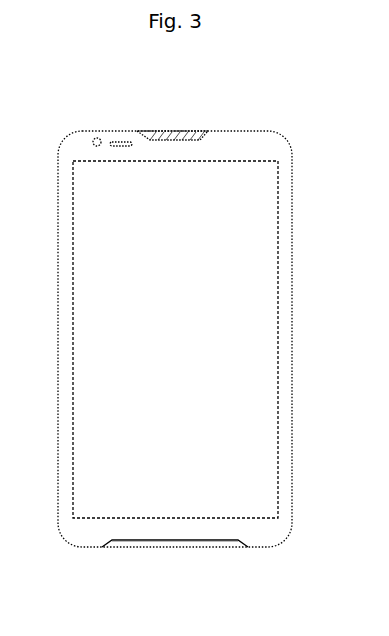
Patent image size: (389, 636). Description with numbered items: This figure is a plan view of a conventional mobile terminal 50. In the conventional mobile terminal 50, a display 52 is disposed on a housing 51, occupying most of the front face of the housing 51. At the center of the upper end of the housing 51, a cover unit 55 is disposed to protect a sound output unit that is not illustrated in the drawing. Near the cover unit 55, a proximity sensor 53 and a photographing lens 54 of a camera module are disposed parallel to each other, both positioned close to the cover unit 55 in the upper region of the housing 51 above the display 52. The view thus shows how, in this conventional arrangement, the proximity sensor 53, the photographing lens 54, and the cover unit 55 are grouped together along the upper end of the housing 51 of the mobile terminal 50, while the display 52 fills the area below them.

The mobile terminal 50 is at (296, 91).
The housing 51 is at (290, 226).
The display 52 is at (276, 248).
The proximity sensor 53 is at (110, 145).
The photographing lens 54 is at (93, 139).
The cover unit 55 is at (195, 131).